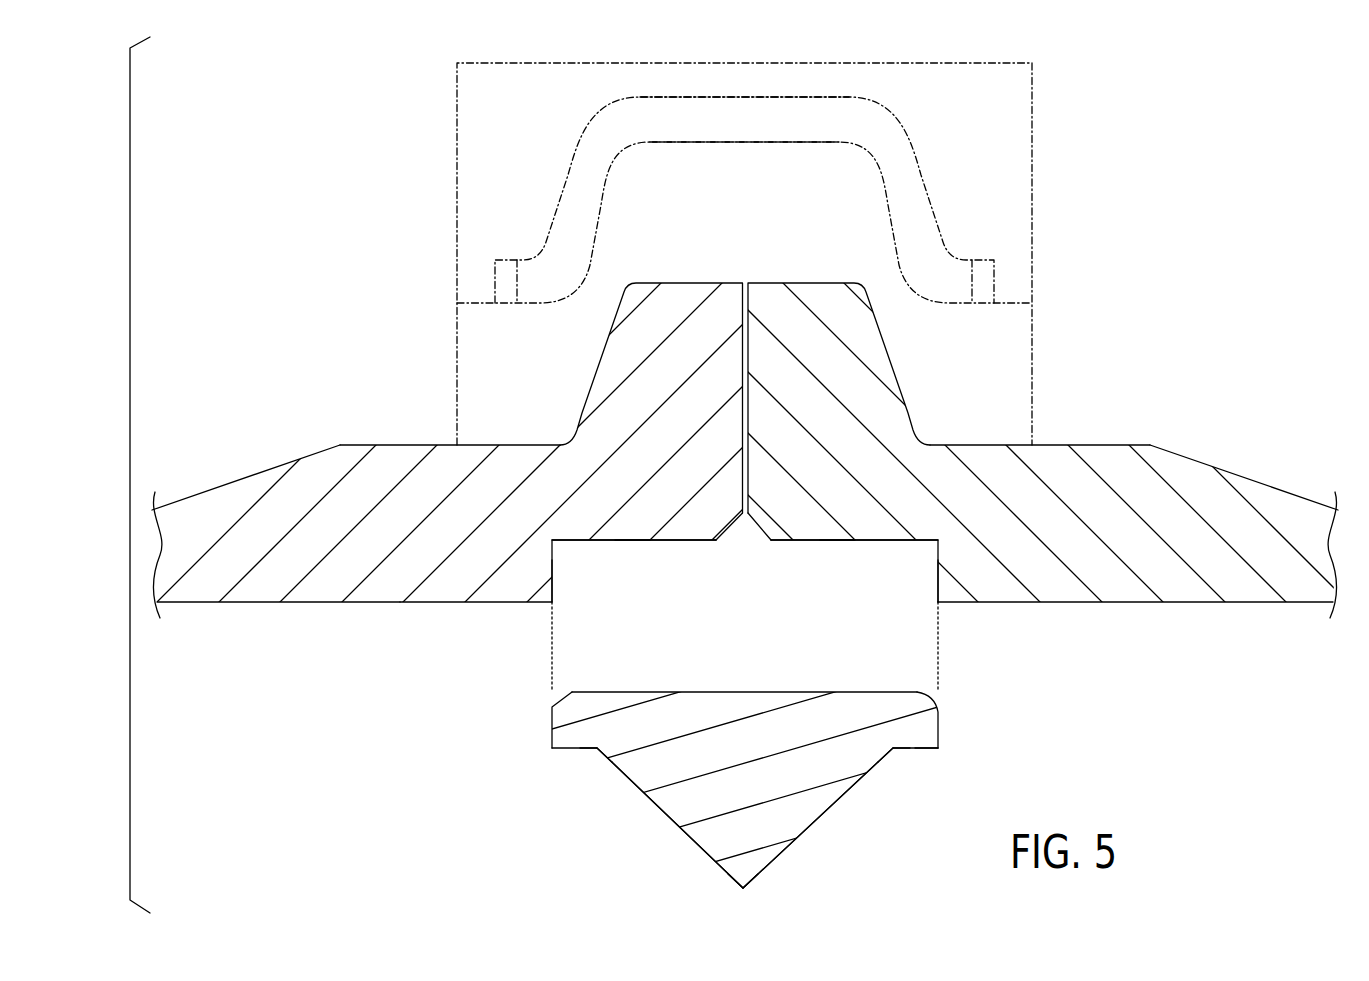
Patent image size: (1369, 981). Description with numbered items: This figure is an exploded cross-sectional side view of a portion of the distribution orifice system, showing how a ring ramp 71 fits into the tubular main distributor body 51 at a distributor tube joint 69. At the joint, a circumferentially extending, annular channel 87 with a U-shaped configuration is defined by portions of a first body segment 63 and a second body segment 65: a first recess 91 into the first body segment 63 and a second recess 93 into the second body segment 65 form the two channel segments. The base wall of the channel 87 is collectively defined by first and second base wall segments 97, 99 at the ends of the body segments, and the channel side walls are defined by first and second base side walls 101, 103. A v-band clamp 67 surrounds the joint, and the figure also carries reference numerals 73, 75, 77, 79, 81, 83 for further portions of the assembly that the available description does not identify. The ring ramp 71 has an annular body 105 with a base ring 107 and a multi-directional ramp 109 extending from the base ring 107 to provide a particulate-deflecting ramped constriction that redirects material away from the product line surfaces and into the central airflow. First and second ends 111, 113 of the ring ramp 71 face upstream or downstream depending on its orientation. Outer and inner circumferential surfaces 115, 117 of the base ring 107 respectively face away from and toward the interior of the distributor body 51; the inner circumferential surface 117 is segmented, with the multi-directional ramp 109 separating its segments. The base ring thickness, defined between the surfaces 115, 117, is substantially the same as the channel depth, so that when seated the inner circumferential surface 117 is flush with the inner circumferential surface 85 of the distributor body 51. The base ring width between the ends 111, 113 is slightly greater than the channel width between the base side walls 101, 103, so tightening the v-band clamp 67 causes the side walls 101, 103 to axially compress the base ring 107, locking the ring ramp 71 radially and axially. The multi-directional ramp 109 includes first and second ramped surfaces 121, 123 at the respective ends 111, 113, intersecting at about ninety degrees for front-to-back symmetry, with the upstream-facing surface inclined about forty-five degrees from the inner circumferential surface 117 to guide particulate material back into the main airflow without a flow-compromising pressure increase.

The distributor body 51 is at (300, 360).
The first body segment 63 is at (254, 590).
The second body segment 65 is at (1183, 592).
The v-band clamp 67 is at (590, 90).
The distributor tube joint 69 is at (1074, 365).
The ring ramp 71 is at (579, 803).
The first body half 73 is at (625, 347).
The second body half 75 is at (857, 377).
The first flange 77 is at (420, 482).
The second flange 79 is at (1090, 488).
The inner seal surface 81 is at (829, 115).
The outer seal surface 83 is at (745, 64).
The inner circumferential surface 85 is at (1124, 612).
The channel 87 is at (702, 549).
The first recess 91 is at (665, 560).
The second recess 93 is at (804, 553).
The first base wall segment 97 is at (632, 542).
The second base wall segment 99 is at (837, 542).
The first base side wall 101 is at (553, 571).
The second base side wall 103 is at (937, 571).
The annular body 105 is at (826, 687).
The base ring 107 is at (956, 753).
The multi-directional ramp 109 is at (771, 878).
The first end 111 is at (535, 740).
The second end 113 is at (951, 725).
The outer circumferential surface 115 is at (741, 691).
The inner circumferential surface 117 is at (570, 752).
The first ramped surface 121 is at (665, 820).
The second ramped surface 123 is at (822, 820).